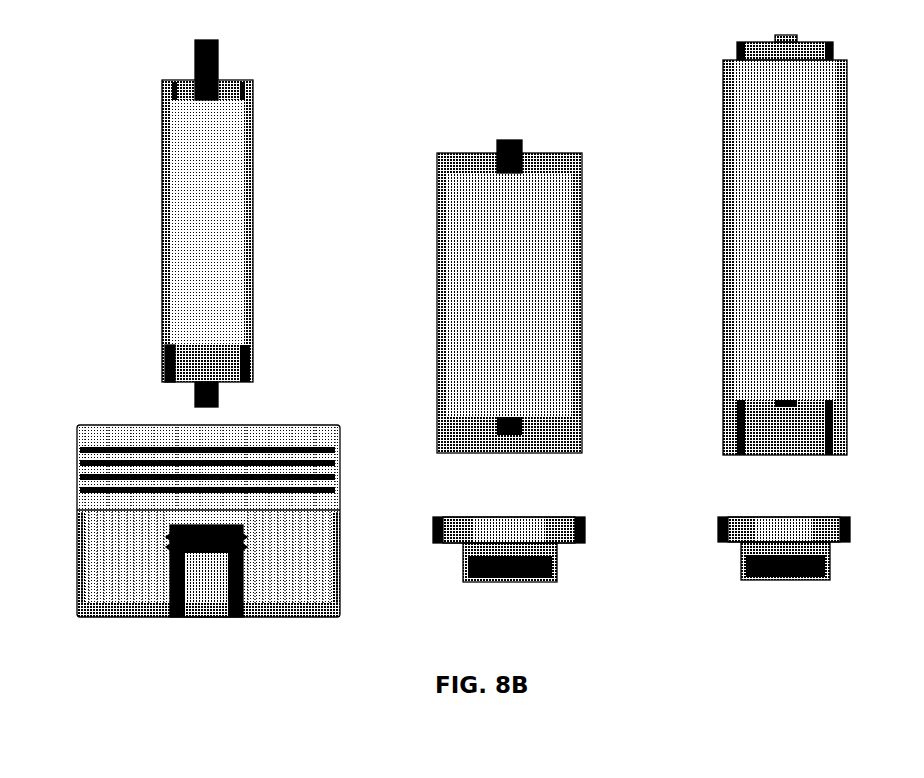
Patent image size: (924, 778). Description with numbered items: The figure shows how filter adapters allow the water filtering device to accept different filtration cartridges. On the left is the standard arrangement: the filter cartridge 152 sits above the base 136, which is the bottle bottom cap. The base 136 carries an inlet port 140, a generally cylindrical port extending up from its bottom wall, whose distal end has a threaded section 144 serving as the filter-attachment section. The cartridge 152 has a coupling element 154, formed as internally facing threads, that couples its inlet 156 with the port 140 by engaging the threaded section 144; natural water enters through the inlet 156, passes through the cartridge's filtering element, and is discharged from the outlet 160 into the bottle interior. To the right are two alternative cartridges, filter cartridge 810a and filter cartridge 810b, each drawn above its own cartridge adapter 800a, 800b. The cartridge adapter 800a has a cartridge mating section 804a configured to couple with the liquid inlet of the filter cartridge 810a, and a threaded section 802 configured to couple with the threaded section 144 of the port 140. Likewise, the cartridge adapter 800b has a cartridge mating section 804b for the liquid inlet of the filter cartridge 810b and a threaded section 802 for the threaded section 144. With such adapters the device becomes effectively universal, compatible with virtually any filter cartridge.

The base 136 is at (86, 421).
The inlet port 140 is at (182, 616).
The threaded section 144 is at (170, 545).
The filter cartridge 152 is at (166, 78).
The coupling element 154 is at (168, 368).
The inlet 156 is at (220, 386).
The outlet 160 is at (215, 40).
The cartridge adapter 800a is at (438, 514).
The cartridge adapter 800b is at (735, 514).
The threaded section 802 is at (468, 560).
The cartridge mating section 804a is at (563, 517).
The cartridge mating section 804b is at (830, 517).
The filter cartridge 810a is at (458, 149).
The filter cartridge 810b is at (730, 56).